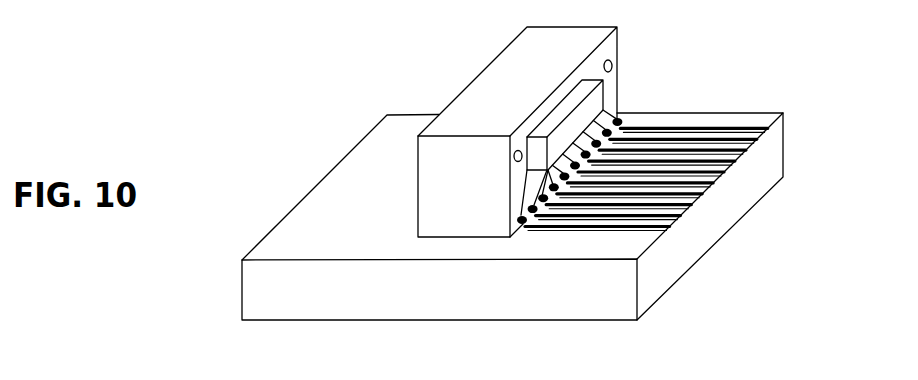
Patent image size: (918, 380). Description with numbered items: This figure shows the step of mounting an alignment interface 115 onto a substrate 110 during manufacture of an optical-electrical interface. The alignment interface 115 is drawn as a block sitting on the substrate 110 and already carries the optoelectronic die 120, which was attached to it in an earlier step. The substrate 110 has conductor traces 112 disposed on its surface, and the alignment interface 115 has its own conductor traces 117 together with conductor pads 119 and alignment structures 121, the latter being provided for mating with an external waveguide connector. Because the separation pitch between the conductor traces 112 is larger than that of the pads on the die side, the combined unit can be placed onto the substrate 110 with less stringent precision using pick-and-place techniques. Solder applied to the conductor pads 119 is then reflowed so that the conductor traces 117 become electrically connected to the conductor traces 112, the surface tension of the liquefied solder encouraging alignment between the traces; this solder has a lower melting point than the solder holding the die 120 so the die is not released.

The substrate 110 is at (415, 299).
The conductor traces 112 is at (781, 112).
The alignment interface 115 is at (472, 194).
The conductor traces 117 is at (521, 207).
The conductor pads 119 is at (624, 122).
The optoelectronic die 120 is at (602, 100).
The alignment structures 121 is at (516, 150).